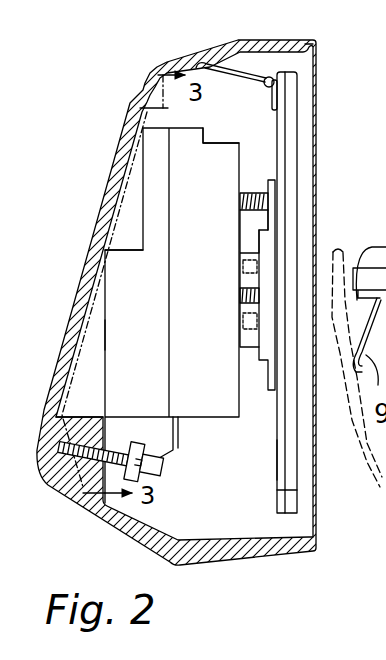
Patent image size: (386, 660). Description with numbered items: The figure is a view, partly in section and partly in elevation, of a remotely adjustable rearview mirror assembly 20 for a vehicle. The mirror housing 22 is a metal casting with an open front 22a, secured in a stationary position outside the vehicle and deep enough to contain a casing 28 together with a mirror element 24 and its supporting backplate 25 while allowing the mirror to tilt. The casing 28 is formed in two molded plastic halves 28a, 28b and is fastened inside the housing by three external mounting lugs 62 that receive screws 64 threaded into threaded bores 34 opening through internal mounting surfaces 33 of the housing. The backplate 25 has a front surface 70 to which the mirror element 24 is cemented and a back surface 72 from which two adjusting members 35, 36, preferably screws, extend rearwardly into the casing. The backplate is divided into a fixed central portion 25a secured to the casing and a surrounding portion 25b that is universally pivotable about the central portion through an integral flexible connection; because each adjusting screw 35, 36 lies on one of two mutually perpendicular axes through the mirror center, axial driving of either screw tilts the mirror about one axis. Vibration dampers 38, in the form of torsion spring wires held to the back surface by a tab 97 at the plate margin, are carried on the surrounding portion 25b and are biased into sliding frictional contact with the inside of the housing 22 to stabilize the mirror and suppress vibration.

The latch assembly 20 is at (115, 110).
The mirror housing 22 is at (97, 226).
The open front 22a is at (320, 55).
The mirror element 24 is at (298, 92).
The supporting backplate 25 is at (287, 120).
The fixed central portion 25a is at (268, 362).
The surrounding portion 25b is at (278, 462).
The casing 28 is at (116, 295).
The casing half 28a is at (118, 335).
The casing half 28b is at (207, 141).
The mounting surfaces 33 is at (107, 273).
The threaded bores 34 is at (123, 446).
The adjusting member 35 is at (240, 292).
The adjusting member 36 is at (255, 192).
The vibration dampers 38 is at (238, 50).
The external mounting lugs 62 is at (78, 498).
The screws 64 is at (160, 470).
The front surface 70 is at (294, 493).
The back surface 72 is at (277, 493).
The tab 97 is at (355, 255).